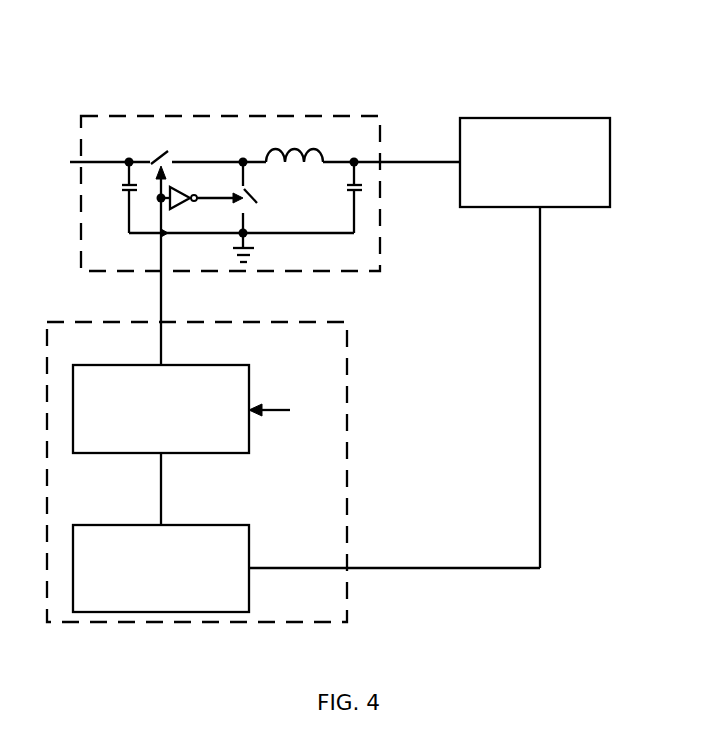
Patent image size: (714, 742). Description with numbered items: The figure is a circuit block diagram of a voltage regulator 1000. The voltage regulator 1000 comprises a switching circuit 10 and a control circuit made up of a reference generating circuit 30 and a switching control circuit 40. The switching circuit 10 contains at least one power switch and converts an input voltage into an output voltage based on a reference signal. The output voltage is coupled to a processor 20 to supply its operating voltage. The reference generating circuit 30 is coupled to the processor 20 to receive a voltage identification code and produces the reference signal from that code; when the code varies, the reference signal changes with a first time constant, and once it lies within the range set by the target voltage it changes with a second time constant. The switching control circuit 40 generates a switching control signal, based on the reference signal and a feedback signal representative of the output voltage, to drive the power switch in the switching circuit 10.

The voltage regulator 1000 is at (612, 75).
The switching circuit 10 is at (272, 116).
The processor 20 is at (497, 118).
The reference generating circuit 30 is at (220, 525).
The switching control circuit 40 is at (220, 365).